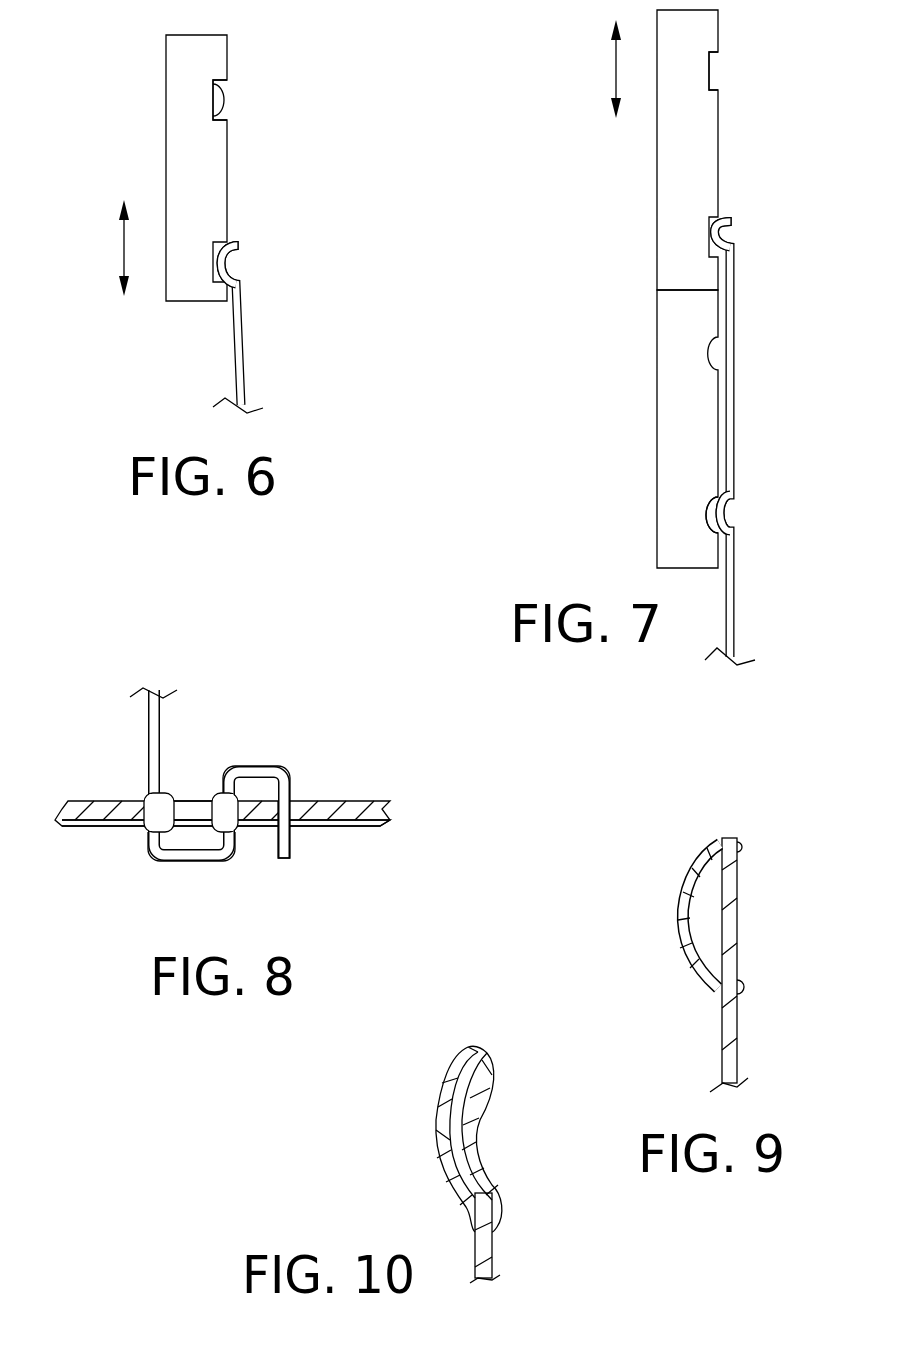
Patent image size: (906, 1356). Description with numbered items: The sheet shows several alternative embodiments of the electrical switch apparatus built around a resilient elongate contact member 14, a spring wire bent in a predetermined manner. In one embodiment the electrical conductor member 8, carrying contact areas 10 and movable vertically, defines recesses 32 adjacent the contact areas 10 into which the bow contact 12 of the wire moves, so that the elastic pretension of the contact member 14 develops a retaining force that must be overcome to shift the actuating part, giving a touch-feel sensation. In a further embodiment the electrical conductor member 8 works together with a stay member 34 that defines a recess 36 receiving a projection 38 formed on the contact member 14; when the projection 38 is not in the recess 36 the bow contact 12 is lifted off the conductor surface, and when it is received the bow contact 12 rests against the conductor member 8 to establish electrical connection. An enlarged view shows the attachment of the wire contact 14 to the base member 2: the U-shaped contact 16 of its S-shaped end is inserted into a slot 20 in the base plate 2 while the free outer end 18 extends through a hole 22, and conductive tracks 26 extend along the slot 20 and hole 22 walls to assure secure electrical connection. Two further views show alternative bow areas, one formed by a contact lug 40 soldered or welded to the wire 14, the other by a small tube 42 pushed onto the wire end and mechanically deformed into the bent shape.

In FIG. 8, the base member 2 is at (83, 805).
In FIG. 6, the electrical conductor member 8 is at (232, 172).
In FIG. 7, the electrical conductor member 8 is at (722, 147).
In FIG. 6, the contact areas 10 is at (224, 80).
In FIG. 7, the contact areas 10 is at (710, 83).
In FIG. 6, the bow contact 12 is at (238, 263).
In FIG. 7, the bow contact 12 is at (729, 238).
In FIG. 6, the resilient elongate contact member 14 is at (246, 346).
In FIG. 7, the resilient elongate contact member 14 is at (736, 322).
In FIG. 8, the resilient elongate contact member 14 is at (150, 724).
In FIG. 9, the resilient elongate contact member 14 is at (733, 1026).
In FIG. 10, the resilient elongate contact member 14 is at (491, 1243).
In FIG. 8, the U-shaped contact 16 is at (193, 861).
In FIG. 8, the free outer end 18 is at (282, 862).
In FIG. 8, the slot 20 is at (190, 810).
In FIG. 8, the hole 22 is at (288, 776).
In FIG. 8, the conductive tracks 26 is at (348, 828).
In FIG. 6, the recesses 32 is at (221, 106).
In FIG. 7, the stay member 34 is at (679, 417).
In FIG. 7, the recess 36 is at (708, 514).
In FIG. 7, the projection 38 is at (727, 518).
In FIG. 9, the contact lug 40 is at (681, 900).
In FIG. 10, the small tube 42 is at (456, 1078).